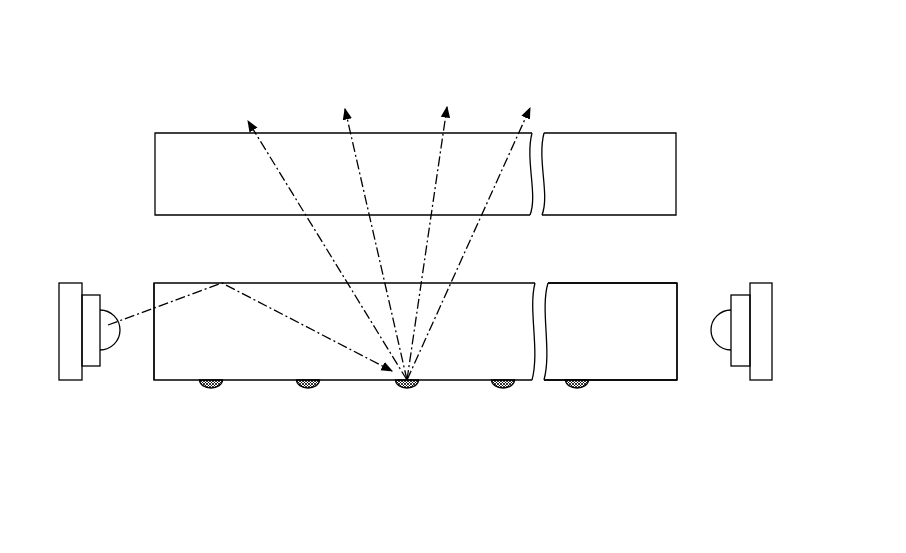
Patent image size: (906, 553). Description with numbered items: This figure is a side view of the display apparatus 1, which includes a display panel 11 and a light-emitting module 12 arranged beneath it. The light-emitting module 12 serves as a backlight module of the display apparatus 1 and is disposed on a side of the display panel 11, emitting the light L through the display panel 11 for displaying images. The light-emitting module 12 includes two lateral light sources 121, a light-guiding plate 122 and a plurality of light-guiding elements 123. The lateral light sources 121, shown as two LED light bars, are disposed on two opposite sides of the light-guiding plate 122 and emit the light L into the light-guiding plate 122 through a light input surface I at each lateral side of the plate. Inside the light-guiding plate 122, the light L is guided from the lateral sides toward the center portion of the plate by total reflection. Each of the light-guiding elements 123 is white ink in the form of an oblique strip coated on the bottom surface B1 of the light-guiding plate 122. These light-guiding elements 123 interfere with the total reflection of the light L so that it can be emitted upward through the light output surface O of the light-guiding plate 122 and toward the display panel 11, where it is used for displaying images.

The display apparatus 1 is at (152, 109).
The display panel 11 is at (177, 172).
The light-emitting module 12 is at (172, 260).
The lateral light sources 121 is at (70, 367).
The light-guiding plate 122 is at (307, 297).
The light-guiding elements 123 is at (308, 388).
The light L is at (319, 230).
The light output surface O is at (637, 283).
The light input surface I is at (677, 297).
The bottom surface B1 is at (638, 380).